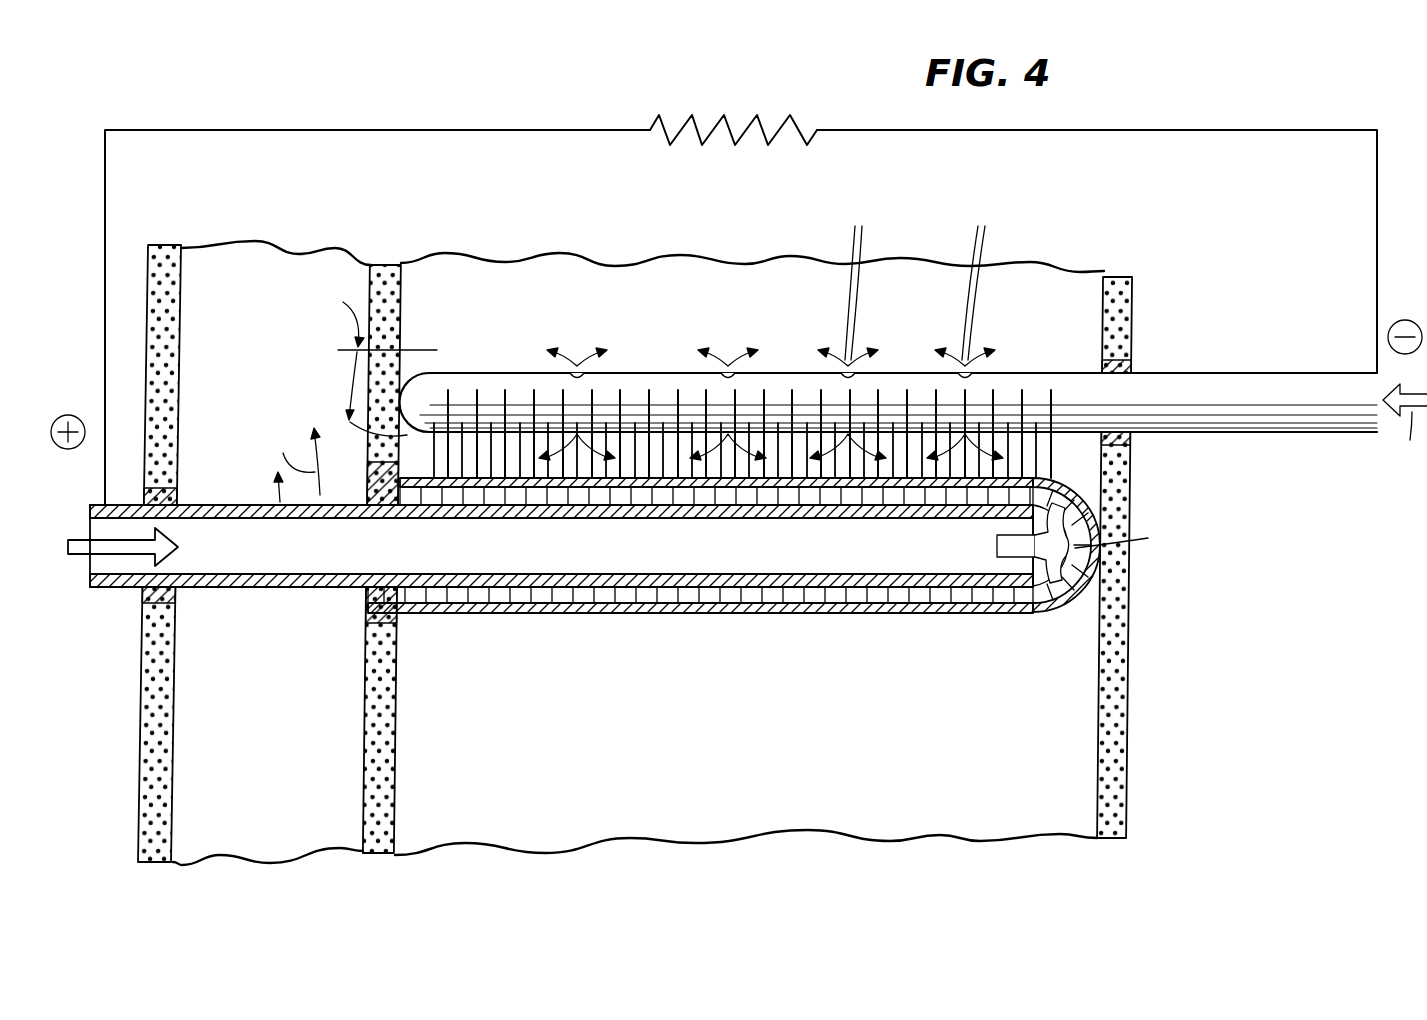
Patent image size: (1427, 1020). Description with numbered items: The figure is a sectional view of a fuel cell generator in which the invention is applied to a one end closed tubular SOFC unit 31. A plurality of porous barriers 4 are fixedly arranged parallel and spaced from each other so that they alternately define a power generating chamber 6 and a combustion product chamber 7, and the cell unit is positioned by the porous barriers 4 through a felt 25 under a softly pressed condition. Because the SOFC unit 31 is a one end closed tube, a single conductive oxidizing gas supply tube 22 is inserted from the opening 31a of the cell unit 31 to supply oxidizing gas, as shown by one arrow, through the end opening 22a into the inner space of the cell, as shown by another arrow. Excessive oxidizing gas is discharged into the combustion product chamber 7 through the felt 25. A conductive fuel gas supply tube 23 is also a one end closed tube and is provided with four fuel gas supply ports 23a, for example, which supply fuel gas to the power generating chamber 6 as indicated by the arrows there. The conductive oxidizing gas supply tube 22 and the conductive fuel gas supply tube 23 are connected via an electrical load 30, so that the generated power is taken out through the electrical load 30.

The porous barrier 4 is at (168, 246).
The power generating chamber 6 is at (487, 317).
The combustion product chamber 7 is at (277, 317).
The conductive oxidizing gas supply tube 22 is at (240, 505).
The end opening 22a is at (1068, 585).
The conductive fuel gas supply tube 23 is at (1266, 415).
The fuel gas supply port 23a is at (577, 362).
The felt 25 is at (1100, 438).
The electrical load 30 is at (765, 98).
The one end closed tubular SOFC unit 31 is at (640, 600).
The opening 31a is at (363, 590).